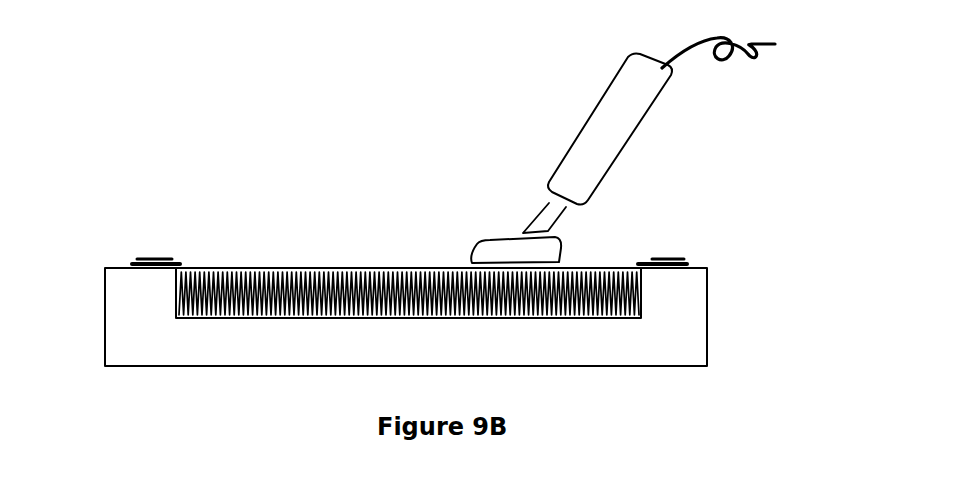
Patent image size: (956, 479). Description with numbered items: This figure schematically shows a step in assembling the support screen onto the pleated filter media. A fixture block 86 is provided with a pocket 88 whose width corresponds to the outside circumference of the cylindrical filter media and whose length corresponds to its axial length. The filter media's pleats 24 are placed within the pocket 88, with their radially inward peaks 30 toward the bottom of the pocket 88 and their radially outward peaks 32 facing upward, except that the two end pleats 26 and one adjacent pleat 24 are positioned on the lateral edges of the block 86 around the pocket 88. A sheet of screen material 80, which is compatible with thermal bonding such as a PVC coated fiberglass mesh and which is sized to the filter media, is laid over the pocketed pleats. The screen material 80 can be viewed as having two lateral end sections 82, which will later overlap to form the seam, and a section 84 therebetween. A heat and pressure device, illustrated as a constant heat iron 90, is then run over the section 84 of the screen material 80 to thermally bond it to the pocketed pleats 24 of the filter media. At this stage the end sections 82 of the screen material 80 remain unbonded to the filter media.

The pleats 24 is at (128, 262).
The end pleats 26 is at (147, 255).
The radially inward peaks 30 is at (520, 320).
The radially outward peaks 32 is at (292, 268).
The screen material 80 is at (399, 266).
The lateral end sections 82 is at (180, 377).
The section 84 is at (368, 268).
The fixture block 86 is at (685, 312).
The pocket 88 is at (593, 320).
The constant heat iron 90 is at (607, 137).